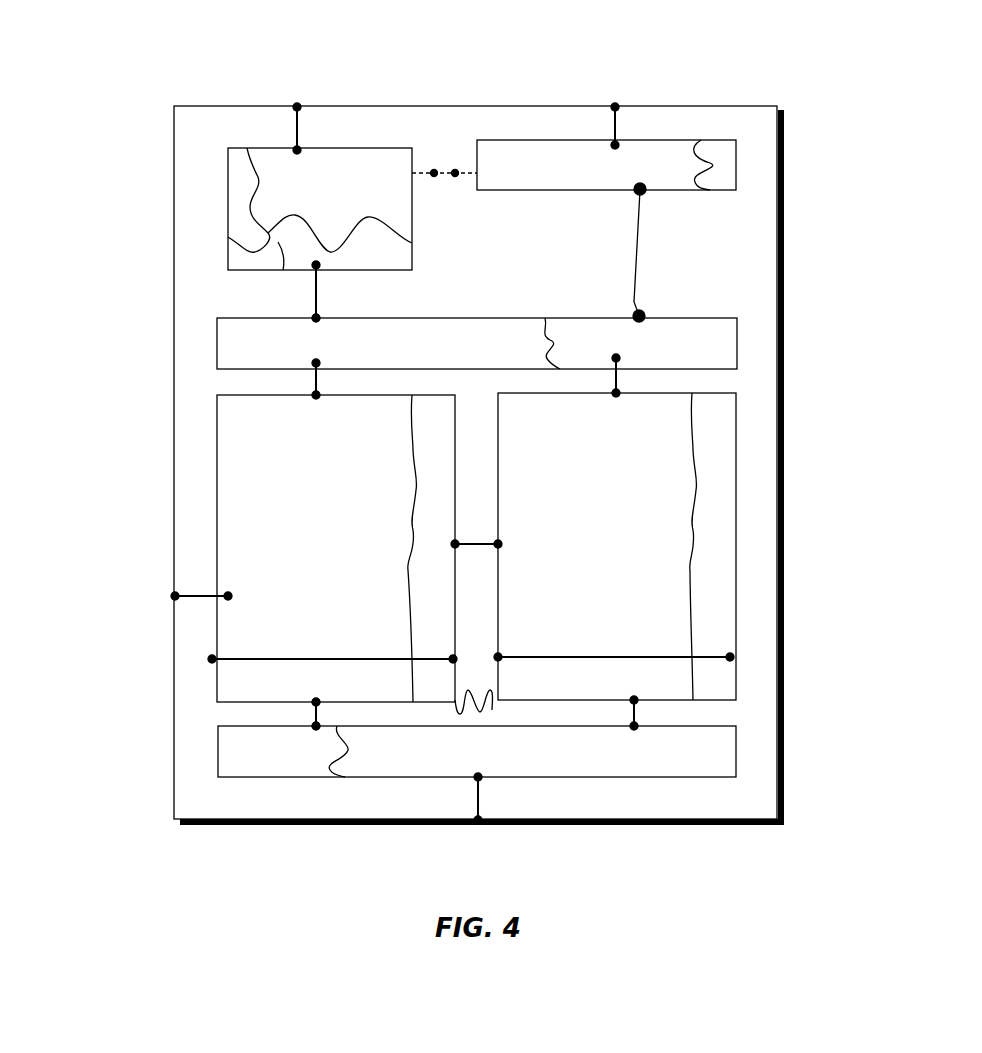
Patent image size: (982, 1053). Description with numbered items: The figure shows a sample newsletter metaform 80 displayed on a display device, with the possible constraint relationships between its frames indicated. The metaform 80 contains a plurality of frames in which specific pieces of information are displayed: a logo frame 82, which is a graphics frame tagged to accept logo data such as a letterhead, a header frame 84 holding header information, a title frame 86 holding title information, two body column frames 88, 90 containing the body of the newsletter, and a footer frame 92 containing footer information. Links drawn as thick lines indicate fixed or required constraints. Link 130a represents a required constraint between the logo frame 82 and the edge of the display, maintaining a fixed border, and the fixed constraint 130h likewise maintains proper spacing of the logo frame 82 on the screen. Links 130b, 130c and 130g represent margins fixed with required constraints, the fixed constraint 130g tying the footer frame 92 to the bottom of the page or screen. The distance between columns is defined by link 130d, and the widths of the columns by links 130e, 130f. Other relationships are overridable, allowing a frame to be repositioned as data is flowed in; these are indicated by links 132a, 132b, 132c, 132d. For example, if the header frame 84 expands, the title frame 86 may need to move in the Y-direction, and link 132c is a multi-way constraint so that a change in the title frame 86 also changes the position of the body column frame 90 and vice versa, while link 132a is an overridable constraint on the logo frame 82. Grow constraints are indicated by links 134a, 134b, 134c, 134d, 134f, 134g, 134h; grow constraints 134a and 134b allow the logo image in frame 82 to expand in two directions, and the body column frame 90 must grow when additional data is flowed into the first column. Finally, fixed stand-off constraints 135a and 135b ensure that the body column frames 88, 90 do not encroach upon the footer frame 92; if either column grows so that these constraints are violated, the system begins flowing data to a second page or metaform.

The metaform 80 is at (106, 233).
The logo frame 82 is at (340, 163).
The header frame 84 is at (655, 145).
The title frame 86 is at (707, 335).
The body column frame 88 is at (718, 550).
The body column frame 90 is at (240, 563).
The footer frame 92 is at (235, 750).
The link 130a is at (297, 105).
The link 130b is at (615, 105).
The link 130c is at (175, 596).
The link 130d is at (498, 544).
The link 130e is at (212, 659).
The link 130f is at (498, 657).
The link 130g is at (478, 822).
The link 130h is at (455, 170).
The link 132a is at (316, 318).
The link 132b is at (645, 312).
The link 132c is at (316, 363).
The link 132d is at (616, 393).
The link 134a is at (238, 147).
The link 134b is at (385, 225).
The link 134c is at (707, 190).
The link 134d is at (545, 318).
The link 134f is at (688, 549).
The link 134g is at (492, 711).
The link 134h is at (335, 777).
The fixed stand-off constraint 135a is at (313, 715).
The fixed stand-off constraint 135b is at (636, 720).